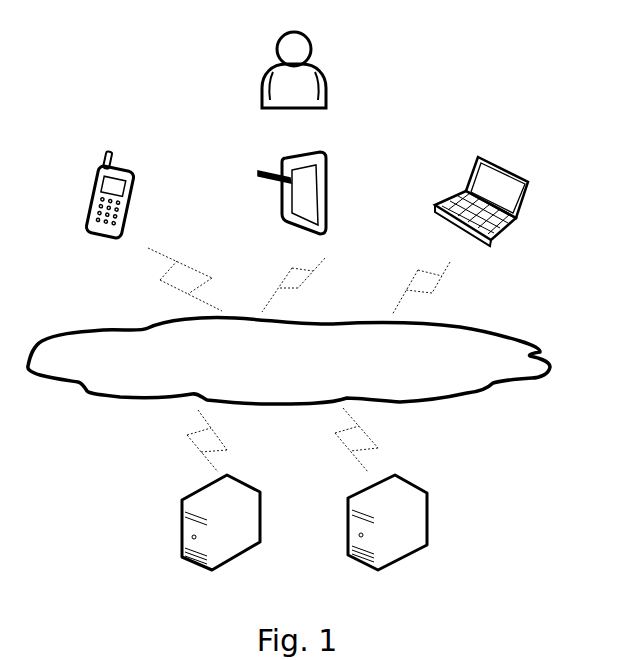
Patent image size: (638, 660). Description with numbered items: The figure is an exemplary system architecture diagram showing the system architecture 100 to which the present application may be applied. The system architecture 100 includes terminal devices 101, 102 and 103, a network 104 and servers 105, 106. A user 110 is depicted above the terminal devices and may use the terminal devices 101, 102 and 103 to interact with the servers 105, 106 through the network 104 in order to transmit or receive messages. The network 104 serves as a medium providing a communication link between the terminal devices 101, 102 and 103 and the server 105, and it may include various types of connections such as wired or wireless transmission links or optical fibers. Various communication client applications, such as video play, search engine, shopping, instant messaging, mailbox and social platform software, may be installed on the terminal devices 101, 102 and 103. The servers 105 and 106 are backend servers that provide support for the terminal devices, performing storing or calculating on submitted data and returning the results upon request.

The system architecture 100 is at (563, 29).
The user 110 is at (294, 85).
The terminal device 101 is at (111, 207).
The terminal device 102 is at (292, 207).
The terminal device 103 is at (481, 213).
The network 104 is at (289, 360).
The server 105 is at (221, 537).
The server 106 is at (387, 536).